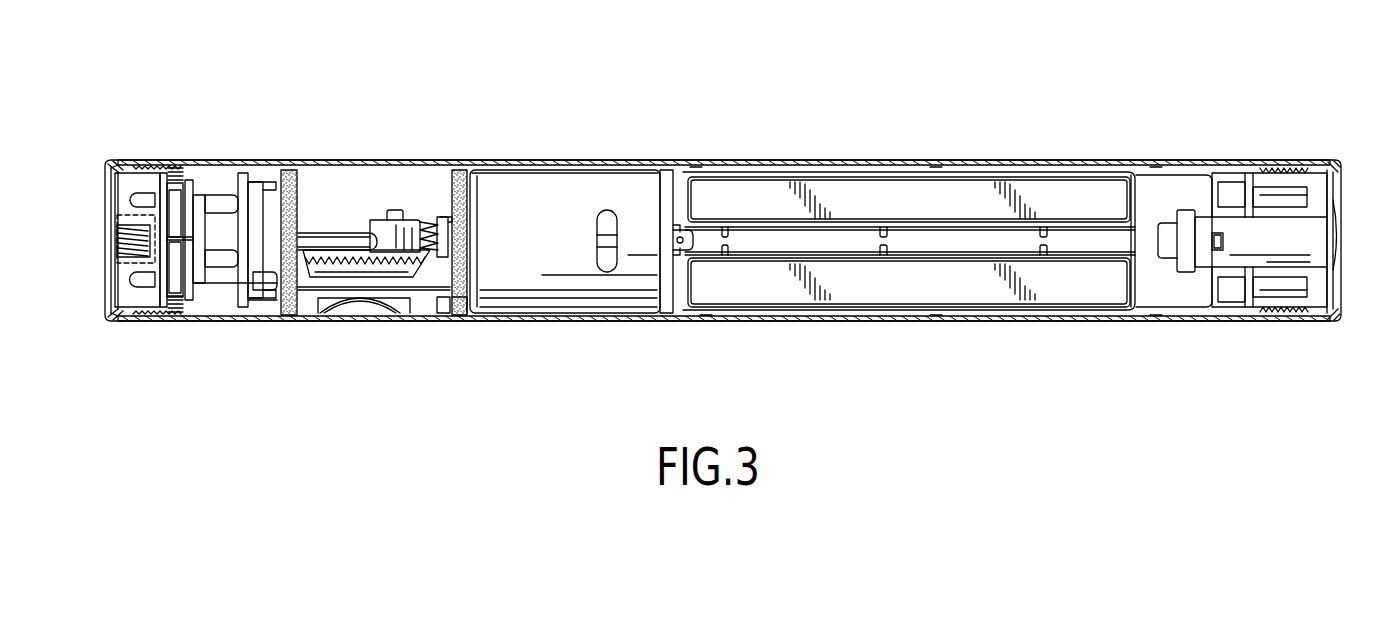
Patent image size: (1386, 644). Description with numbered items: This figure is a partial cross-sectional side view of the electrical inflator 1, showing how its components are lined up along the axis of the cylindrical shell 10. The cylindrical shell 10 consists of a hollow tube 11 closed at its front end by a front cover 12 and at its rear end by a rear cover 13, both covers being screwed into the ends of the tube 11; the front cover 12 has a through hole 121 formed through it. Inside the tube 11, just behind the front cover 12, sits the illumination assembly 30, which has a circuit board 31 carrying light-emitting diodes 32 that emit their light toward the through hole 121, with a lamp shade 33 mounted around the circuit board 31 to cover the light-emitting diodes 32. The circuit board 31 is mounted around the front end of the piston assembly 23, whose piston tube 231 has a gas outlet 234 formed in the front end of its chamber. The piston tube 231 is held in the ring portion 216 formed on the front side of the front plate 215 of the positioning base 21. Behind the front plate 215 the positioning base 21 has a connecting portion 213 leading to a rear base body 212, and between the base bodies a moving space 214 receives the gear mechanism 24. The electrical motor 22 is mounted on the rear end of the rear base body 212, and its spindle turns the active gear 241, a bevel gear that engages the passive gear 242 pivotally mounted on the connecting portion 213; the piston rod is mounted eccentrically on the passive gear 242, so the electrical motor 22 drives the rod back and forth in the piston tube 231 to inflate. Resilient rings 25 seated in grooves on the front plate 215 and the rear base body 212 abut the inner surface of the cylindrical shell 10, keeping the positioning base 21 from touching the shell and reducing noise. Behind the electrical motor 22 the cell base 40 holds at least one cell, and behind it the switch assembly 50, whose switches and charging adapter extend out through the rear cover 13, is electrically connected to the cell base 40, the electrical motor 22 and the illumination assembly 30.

The electrical inflator 1 is at (690, 232).
The cylindrical shell 10 is at (703, 160).
The tube 11 is at (594, 168).
The front cover 12 is at (128, 168).
The through hole 121 is at (113, 180).
The rear cover 13 is at (1323, 160).
The positioning base 21 is at (268, 309).
The rear base body 212 is at (452, 313).
The connecting portion 213 is at (371, 283).
The moving space 214 is at (418, 213).
The front plate 215 is at (281, 307).
The ring portion 216 is at (243, 273).
The electrical motor 22 is at (518, 190).
The piston assembly 23 is at (213, 188).
The piston tube 231 is at (232, 185).
The gas outlet 234 is at (113, 248).
The gear mechanism 24 is at (405, 200).
The active gear 241 is at (436, 246).
The passive gear 242 is at (398, 265).
The resilient rings 25 is at (288, 170).
The illumination assembly 30 is at (141, 320).
The circuit board 31 is at (163, 180).
The light-emitting diode 32 is at (143, 193).
The lamp shade 33 is at (127, 193).
The cell base 40 is at (1022, 172).
The switch assembly 50 is at (1280, 164).